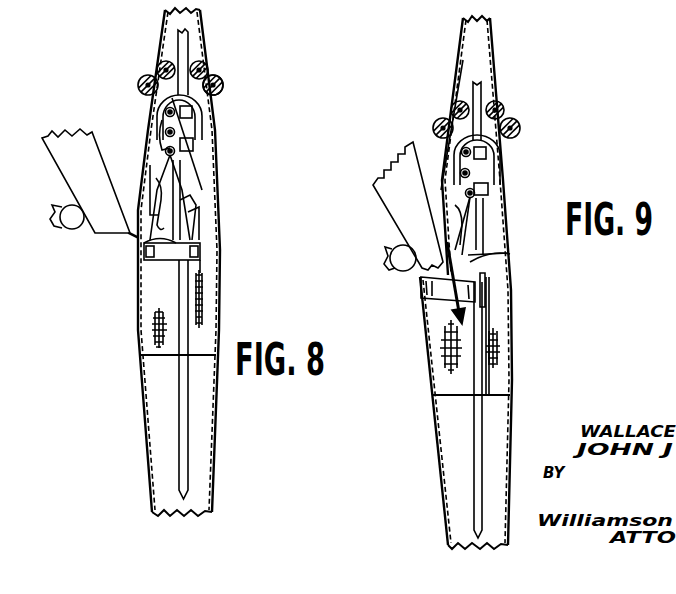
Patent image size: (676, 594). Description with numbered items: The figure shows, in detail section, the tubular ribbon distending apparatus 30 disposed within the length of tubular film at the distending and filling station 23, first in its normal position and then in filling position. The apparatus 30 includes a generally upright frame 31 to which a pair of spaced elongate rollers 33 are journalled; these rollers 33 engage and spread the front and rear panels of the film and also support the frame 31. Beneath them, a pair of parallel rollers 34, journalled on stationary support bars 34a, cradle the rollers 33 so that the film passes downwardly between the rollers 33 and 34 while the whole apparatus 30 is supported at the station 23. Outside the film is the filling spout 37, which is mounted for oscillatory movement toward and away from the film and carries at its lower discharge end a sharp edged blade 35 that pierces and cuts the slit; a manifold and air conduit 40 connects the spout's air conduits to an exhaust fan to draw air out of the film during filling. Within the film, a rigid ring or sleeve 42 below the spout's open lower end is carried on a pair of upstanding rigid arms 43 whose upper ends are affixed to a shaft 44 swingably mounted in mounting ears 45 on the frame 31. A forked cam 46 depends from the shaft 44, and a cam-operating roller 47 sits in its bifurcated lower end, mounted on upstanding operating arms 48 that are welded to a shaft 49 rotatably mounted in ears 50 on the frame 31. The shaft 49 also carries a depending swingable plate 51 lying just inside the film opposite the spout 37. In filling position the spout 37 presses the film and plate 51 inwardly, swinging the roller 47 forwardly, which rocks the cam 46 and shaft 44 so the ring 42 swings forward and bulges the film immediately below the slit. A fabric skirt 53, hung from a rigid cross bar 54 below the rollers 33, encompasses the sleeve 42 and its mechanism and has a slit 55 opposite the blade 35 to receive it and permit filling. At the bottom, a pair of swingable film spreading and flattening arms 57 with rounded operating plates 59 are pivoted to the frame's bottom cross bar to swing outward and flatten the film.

In FIG. 8, the station 23 is at (253, 192).
In FIG. 9, the station 23 is at (526, 214).
In FIG. 9, the tubular ribbon distending apparatus 30 is at (462, 93).
In FIG. 8, the upright frame 31 is at (178, 36).
In FIG. 9, the upright frame 31 is at (482, 92).
In FIG. 8, the elongate rollers 33 is at (203, 64).
In FIG. 9, the elongate rollers 33 is at (503, 97).
In FIG. 8, the rollers 34 is at (216, 78).
In FIG. 9, the rollers 34 is at (520, 130).
In FIG. 8, the stationary support bars 34a is at (223, 87).
In FIG. 8, the sharp edged blade 35 is at (128, 238).
In FIG. 8, the filling spout 37 is at (99, 180).
In FIG. 9, the filling spout 37 is at (378, 188).
In FIG. 8, the manifold and air conduit 40 is at (75, 225).
In FIG. 9, the manifold and air conduit 40 is at (404, 268).
In FIG. 8, the rigid ring or sleeve 42 is at (147, 260).
In FIG. 9, the rigid ring or sleeve 42 is at (420, 292).
In FIG. 8, the upstanding rigid arms 43 is at (202, 236).
In FIG. 9, the upstanding rigid arms 43 is at (512, 255).
In FIG. 8, the shaft 44 is at (160, 110).
In FIG. 9, the shaft 44 is at (461, 165).
In FIG. 8, the mounting ears 45 is at (192, 113).
In FIG. 8, the forked cam 46 is at (193, 131).
In FIG. 9, the forked cam 46 is at (460, 173).
In FIG. 8, the cam-operating roller 47 is at (162, 118).
In FIG. 9, the cam-operating roller 47 is at (490, 182).
In FIG. 8, the upstanding operating arms 48 is at (200, 170).
In FIG. 8, the shaft 49 is at (190, 206).
In FIG. 9, the shaft 49 is at (480, 226).
In FIG. 9, the ears 50 is at (478, 200).
In FIG. 8, the swingable plate 51 is at (156, 183).
In FIG. 9, the swingable plate 51 is at (456, 215).
In FIG. 8, the fabric skirt 53 is at (202, 152).
In FIG. 9, the fabric skirt 53 is at (502, 323).
In FIG. 8, the rigid cross bar 54 is at (202, 103).
In FIG. 9, the rigid cross bar 54 is at (501, 152).
In FIG. 8, the slit 55 is at (171, 260).
In FIG. 8, the film spreading and flattening arms 57 is at (180, 410).
In FIG. 9, the film spreading and flattening arms 57 is at (473, 420).
In FIG. 8, the operating plates 59 is at (202, 258).
In FIG. 9, the operating plates 59 is at (500, 291).